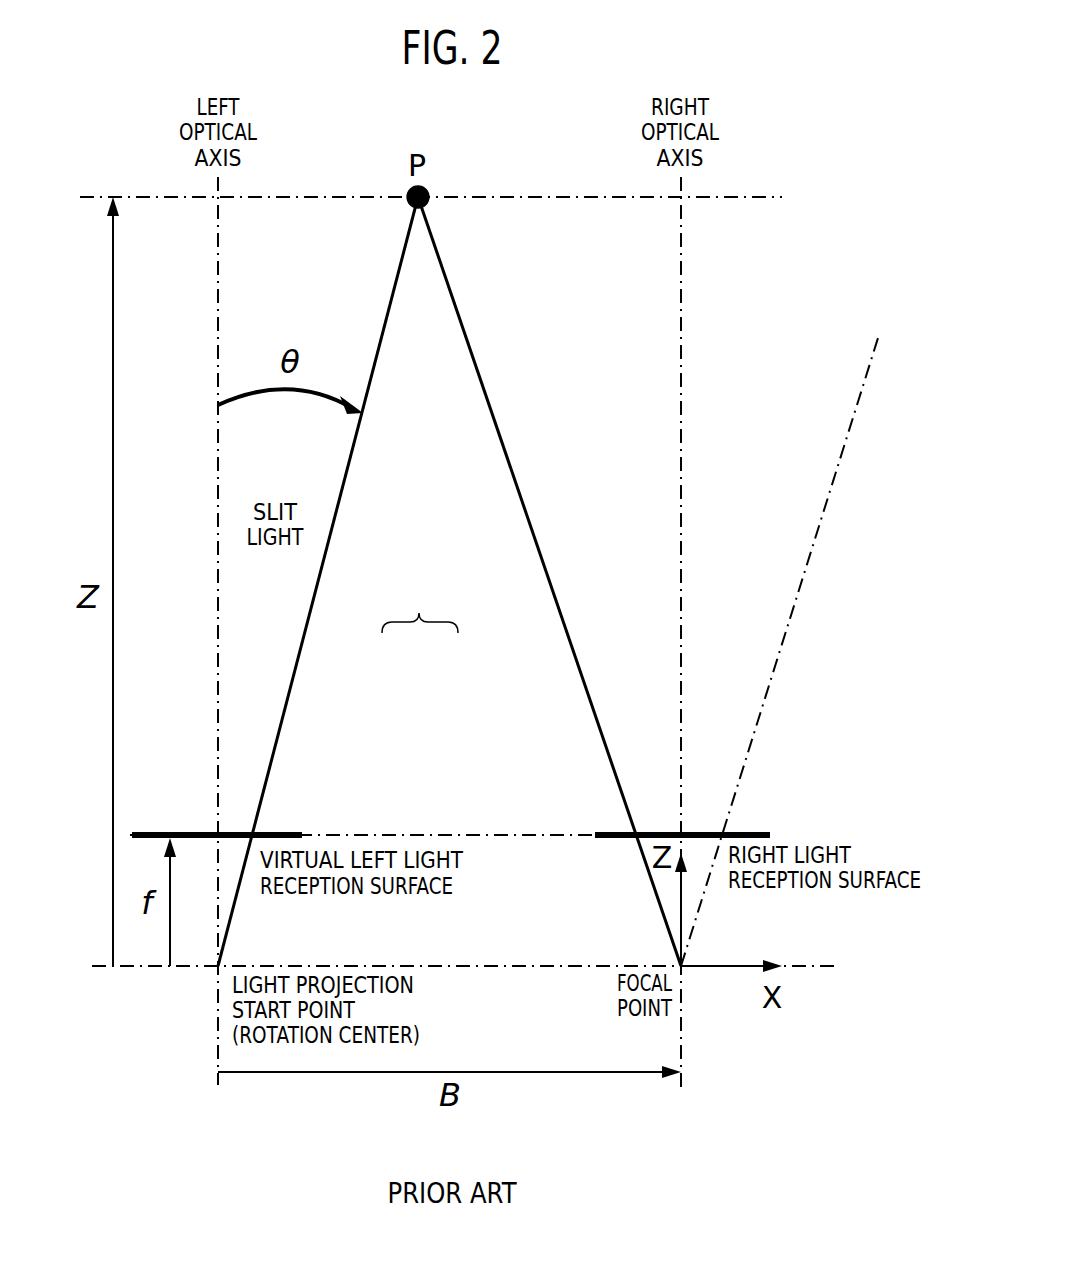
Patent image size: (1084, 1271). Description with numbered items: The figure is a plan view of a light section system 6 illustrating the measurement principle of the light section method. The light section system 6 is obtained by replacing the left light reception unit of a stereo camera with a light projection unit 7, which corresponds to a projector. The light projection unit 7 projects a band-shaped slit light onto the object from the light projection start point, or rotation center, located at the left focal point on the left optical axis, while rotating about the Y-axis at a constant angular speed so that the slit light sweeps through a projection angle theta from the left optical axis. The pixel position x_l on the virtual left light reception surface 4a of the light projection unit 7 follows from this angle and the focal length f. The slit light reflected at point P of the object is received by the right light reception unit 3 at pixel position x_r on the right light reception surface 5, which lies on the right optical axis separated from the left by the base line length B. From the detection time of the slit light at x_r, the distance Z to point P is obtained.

The right light reception unit 3 is at (561, 735).
The virtual left light reception surface 4a is at (193, 833).
The right light reception surface 5 is at (758, 832).
The light section system 6 is at (420, 609).
The light projection unit 7 is at (298, 778).